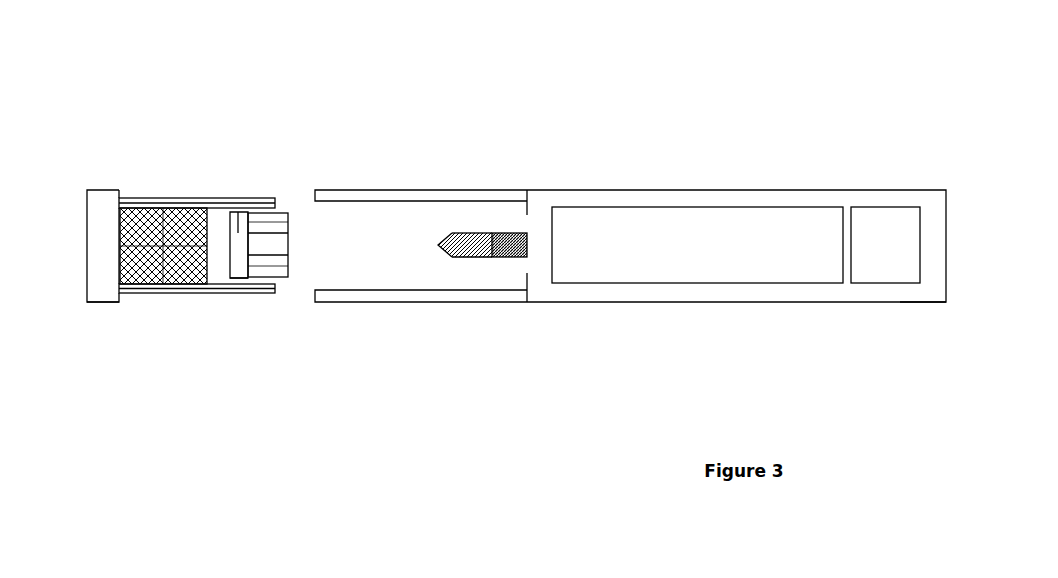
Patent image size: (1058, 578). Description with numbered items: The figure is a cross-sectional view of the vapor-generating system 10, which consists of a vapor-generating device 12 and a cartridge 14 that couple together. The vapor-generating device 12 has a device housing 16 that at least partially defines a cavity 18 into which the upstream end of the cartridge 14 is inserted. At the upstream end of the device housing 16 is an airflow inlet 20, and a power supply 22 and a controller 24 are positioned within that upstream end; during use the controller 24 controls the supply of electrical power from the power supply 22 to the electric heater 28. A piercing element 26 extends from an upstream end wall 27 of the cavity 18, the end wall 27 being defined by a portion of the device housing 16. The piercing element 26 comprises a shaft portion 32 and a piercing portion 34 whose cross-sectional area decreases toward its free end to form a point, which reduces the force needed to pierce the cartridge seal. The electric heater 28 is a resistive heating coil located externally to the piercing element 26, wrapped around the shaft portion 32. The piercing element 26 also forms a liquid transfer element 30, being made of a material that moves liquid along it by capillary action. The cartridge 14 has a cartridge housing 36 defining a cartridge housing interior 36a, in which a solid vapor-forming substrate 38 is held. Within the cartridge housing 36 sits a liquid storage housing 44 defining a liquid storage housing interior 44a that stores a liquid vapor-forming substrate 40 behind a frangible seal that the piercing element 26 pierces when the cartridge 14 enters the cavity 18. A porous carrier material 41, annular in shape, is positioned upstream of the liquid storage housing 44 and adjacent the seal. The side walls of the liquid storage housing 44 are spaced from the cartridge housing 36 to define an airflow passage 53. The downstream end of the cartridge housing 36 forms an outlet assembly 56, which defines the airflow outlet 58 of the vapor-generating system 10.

The vapor-generating system 10 is at (630, 228).
The vapor-generating device 12 is at (646, 186).
The cartridge 14 is at (177, 281).
The device housing 16 is at (548, 190).
The cavity 18 is at (368, 232).
The airflow inlet 20 is at (934, 301).
The power supply 22 is at (697, 245).
The controller 24 is at (885, 245).
The piercing element 26 is at (452, 229).
The upstream end wall 27 is at (527, 258).
The electric heater 28 is at (474, 264).
The liquid transfer element 30 is at (481, 229).
The shaft portion 32 is at (478, 252).
The piercing portion 34 is at (443, 247).
The cartridge housing 36 is at (168, 282).
The cartridge housing interior 36a is at (187, 264).
The solid vapor-forming substrate 38 is at (165, 262).
The liquid vapor-forming substrate 40 is at (239, 214).
The porous carrier material 41 is at (268, 268).
The liquid storage housing 44 is at (250, 251).
The liquid storage housing interior 44a is at (239, 280).
The airflow passage 53 is at (274, 214).
The outlet assembly 56 is at (100, 303).
The airflow outlet 58 is at (86, 292).